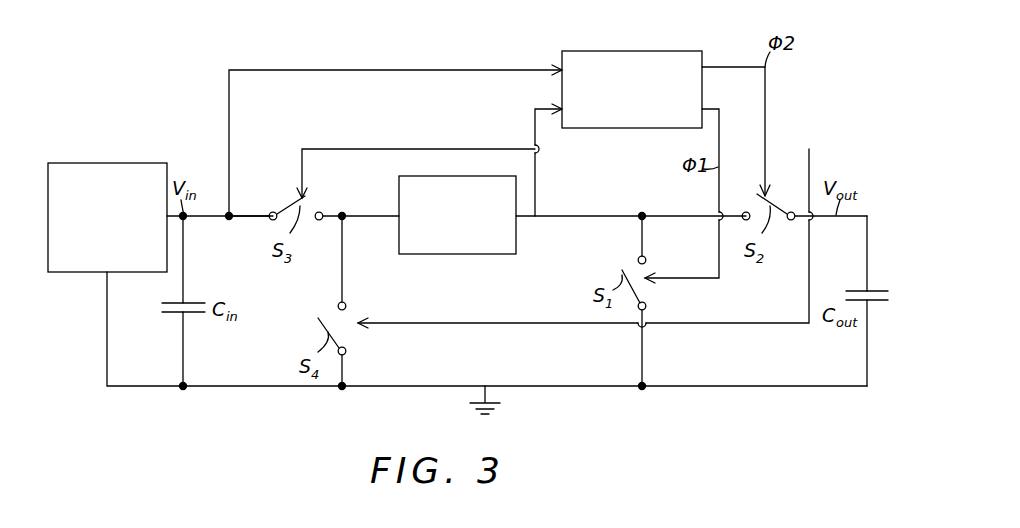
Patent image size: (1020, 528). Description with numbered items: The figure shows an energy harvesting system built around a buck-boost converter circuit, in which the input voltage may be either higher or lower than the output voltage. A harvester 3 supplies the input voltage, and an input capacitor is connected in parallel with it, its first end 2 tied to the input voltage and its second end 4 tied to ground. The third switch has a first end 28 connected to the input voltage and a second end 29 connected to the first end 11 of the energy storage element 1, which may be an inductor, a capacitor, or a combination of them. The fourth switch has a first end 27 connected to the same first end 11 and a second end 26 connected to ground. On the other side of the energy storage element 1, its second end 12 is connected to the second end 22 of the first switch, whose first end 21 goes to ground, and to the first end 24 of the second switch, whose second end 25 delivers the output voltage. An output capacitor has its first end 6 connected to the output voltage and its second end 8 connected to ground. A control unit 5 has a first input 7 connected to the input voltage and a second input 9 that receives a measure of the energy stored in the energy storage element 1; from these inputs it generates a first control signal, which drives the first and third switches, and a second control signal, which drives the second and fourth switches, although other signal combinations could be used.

The energy storage element 1 is at (445, 176).
The first end of capacitor Cin 2 is at (184, 270).
The harvester 3 is at (88, 163).
The second end of capacitor Cin 4 is at (184, 338).
The control unit 5 is at (605, 51).
The first end of capacitor Cout 6 is at (866, 262).
The first input of control unit 7 is at (264, 68).
The second end of capacitor Cout 8 is at (866, 357).
The second input of control unit 9 is at (535, 116).
The first end of energy storage element 11 is at (383, 218).
The second end of energy storage element 12 is at (524, 218).
The first end of switch S1 21 is at (643, 356).
The second end of switch S1 22 is at (643, 246).
The first end of switch S2 24 is at (656, 213).
The second end of switch S2 25 is at (806, 220).
The second end of switch S4 26 is at (343, 368).
The first end of switch S4 27 is at (343, 286).
The first end of switch S3 28 is at (240, 215).
The second end of switch S3 29 is at (335, 215).